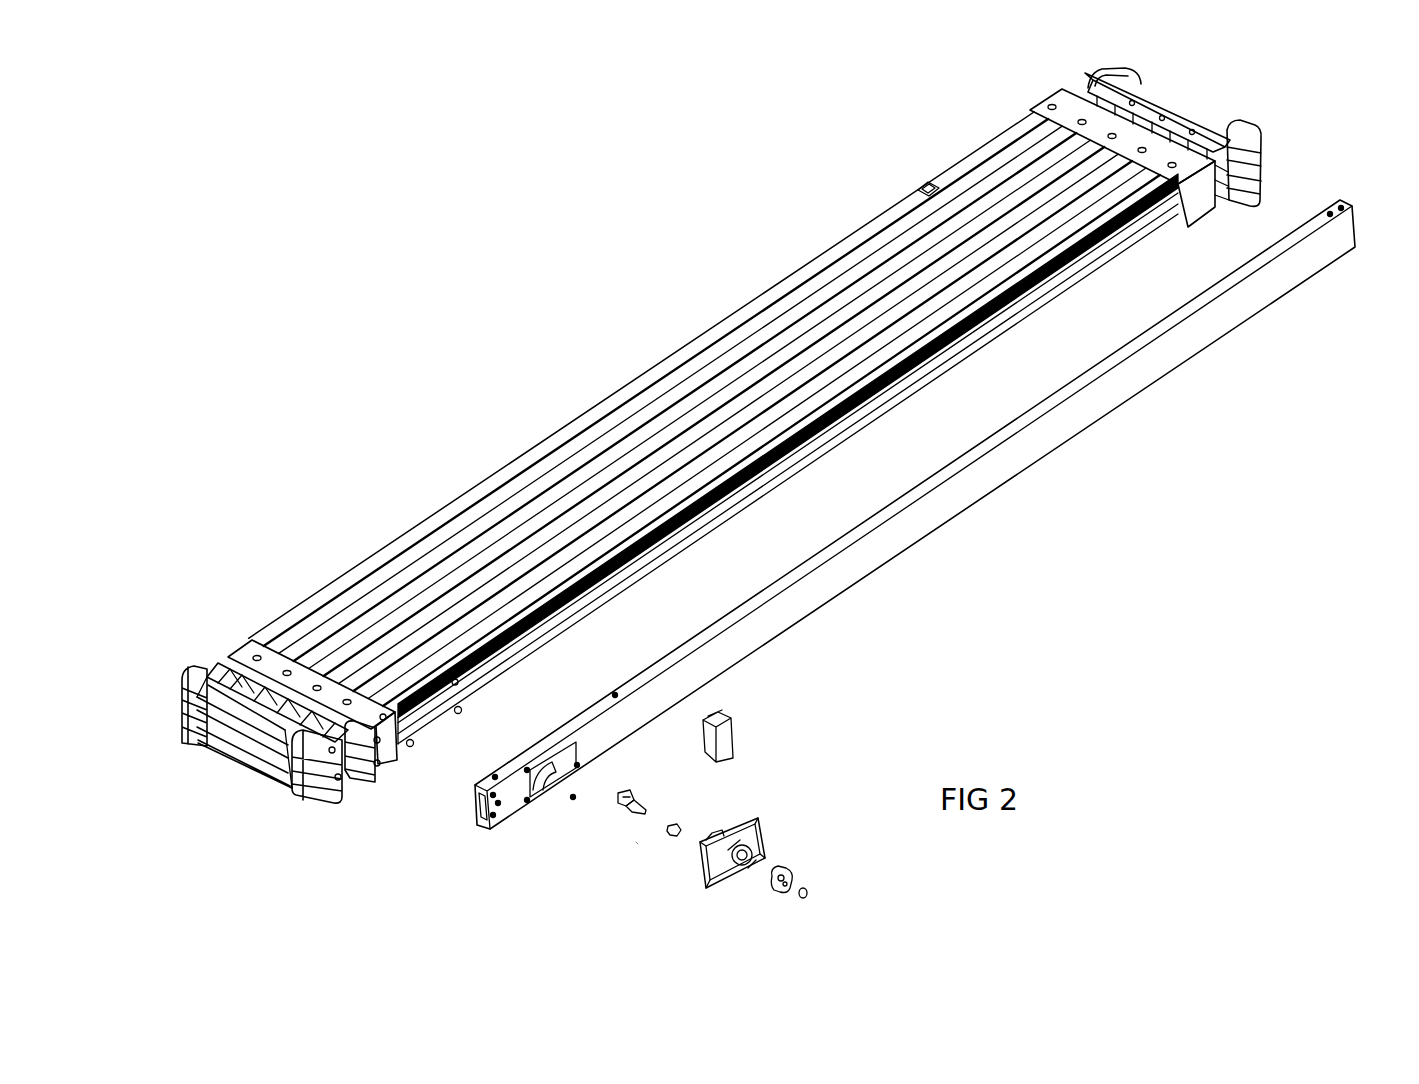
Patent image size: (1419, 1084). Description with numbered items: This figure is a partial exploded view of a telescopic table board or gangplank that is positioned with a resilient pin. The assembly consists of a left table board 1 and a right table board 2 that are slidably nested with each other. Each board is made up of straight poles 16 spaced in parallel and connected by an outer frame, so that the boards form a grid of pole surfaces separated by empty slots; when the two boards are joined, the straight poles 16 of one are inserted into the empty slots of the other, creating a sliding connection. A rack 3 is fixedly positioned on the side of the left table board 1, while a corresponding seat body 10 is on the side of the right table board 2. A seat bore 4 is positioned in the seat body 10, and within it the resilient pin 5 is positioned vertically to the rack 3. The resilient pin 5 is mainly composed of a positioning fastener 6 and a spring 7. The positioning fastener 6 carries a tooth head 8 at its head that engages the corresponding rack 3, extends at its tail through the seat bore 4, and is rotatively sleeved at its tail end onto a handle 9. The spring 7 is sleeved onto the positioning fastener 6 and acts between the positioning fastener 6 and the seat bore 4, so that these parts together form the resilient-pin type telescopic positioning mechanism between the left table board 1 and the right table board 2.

The left table board 1 is at (297, 612).
The right table board 2 is at (1025, 130).
The rack 3 is at (563, 621).
The seat bore 4 is at (735, 855).
The resilient pin 5 is at (641, 852).
The positioning fastener 6 is at (620, 812).
The spring 7 is at (675, 840).
The tooth head 8 is at (621, 800).
The handle 9 is at (787, 872).
The seat body 10 is at (705, 878).
The straight pole 16 is at (845, 330).